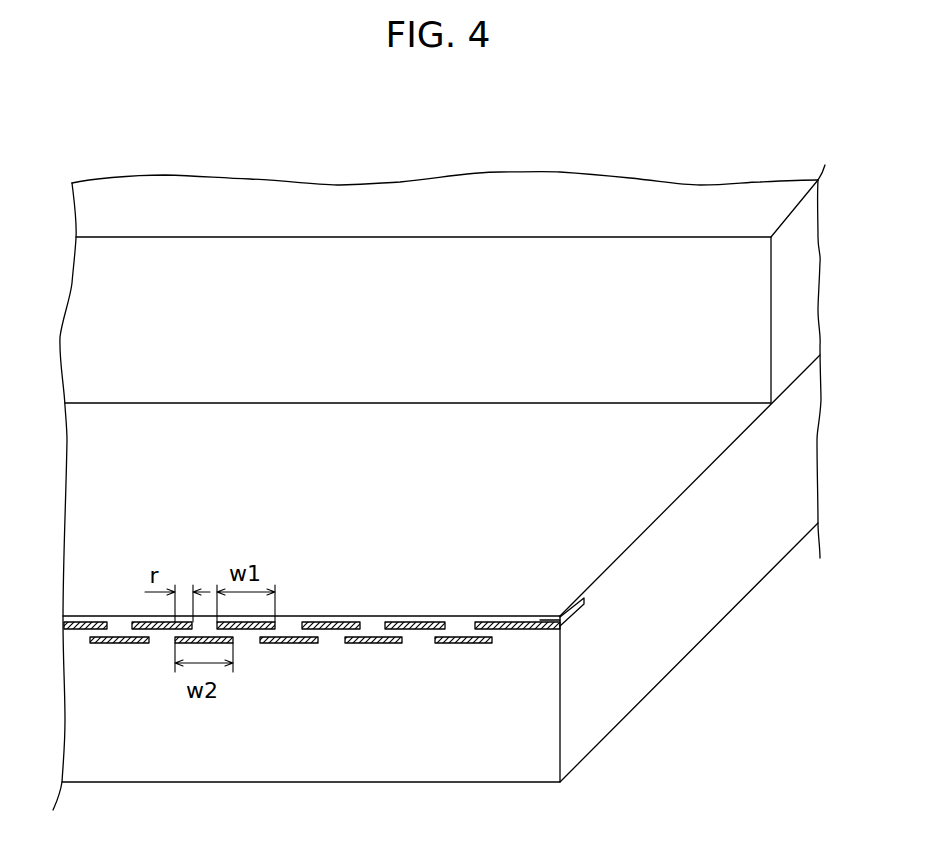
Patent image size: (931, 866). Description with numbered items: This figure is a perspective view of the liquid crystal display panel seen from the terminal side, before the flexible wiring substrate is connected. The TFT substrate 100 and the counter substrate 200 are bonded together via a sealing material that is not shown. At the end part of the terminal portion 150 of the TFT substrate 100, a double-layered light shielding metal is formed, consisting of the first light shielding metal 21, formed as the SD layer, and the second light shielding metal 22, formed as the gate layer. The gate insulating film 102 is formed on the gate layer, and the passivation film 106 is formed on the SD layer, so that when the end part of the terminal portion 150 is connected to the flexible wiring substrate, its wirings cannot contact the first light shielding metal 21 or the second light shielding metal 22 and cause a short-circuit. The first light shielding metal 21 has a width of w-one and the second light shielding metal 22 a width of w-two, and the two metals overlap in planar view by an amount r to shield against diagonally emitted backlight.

The TFT substrate 100 is at (707, 618).
The counter substrate 200 is at (638, 257).
The terminal portion 150 is at (590, 520).
The gate insulating film 102 is at (362, 630).
The passivation film 106 is at (428, 620).
The first light shielding metal 21 is at (525, 629).
The second light shielding metal 22 is at (453, 643).